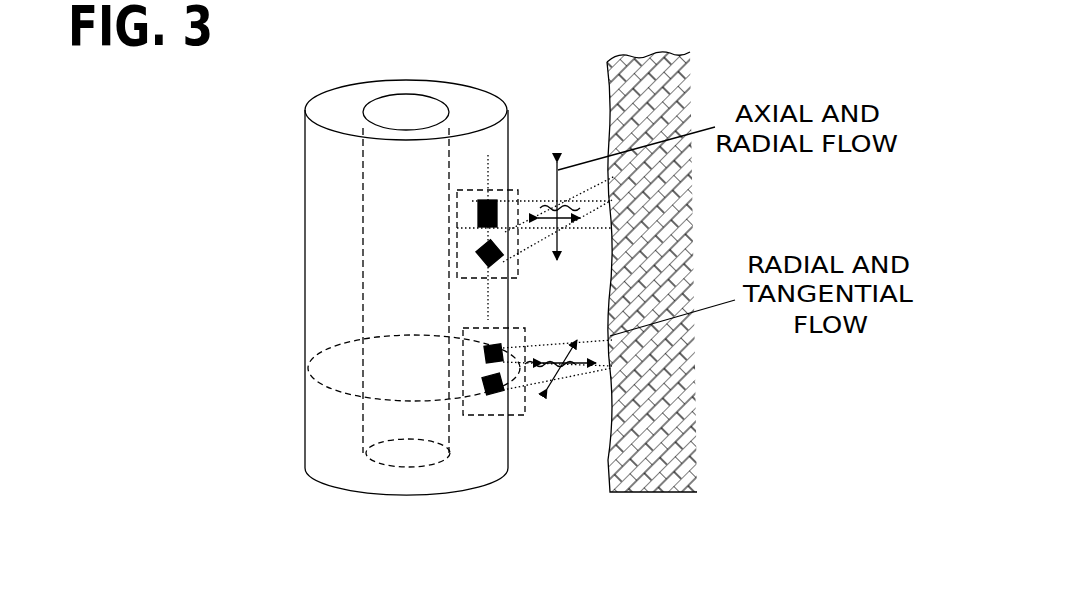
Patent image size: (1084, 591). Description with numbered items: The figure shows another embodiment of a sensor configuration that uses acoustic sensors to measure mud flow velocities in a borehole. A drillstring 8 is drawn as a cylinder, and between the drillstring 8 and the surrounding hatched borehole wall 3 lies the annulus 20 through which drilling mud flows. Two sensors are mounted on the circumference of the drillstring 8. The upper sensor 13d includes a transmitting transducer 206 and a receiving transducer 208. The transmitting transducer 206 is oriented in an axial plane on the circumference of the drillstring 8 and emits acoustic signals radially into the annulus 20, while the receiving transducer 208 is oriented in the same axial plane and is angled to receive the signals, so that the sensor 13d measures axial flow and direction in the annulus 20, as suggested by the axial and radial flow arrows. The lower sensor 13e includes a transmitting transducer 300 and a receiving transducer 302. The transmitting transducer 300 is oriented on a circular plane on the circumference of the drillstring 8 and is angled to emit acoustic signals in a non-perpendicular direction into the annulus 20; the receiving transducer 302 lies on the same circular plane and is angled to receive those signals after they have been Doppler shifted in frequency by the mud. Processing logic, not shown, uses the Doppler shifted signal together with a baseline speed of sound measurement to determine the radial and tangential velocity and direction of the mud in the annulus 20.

The borehole wall / formation 3 is at (653, 480).
The drillstring 8 is at (380, 483).
The sensor 13d is at (517, 190).
The sensor 13e is at (475, 415).
The annulus 20 is at (543, 493).
The transmitting transducer 206 is at (478, 213).
The receiving transducer 208 is at (483, 250).
The transmitting transducer 300 is at (485, 352).
The receiving transducer 302 is at (484, 388).